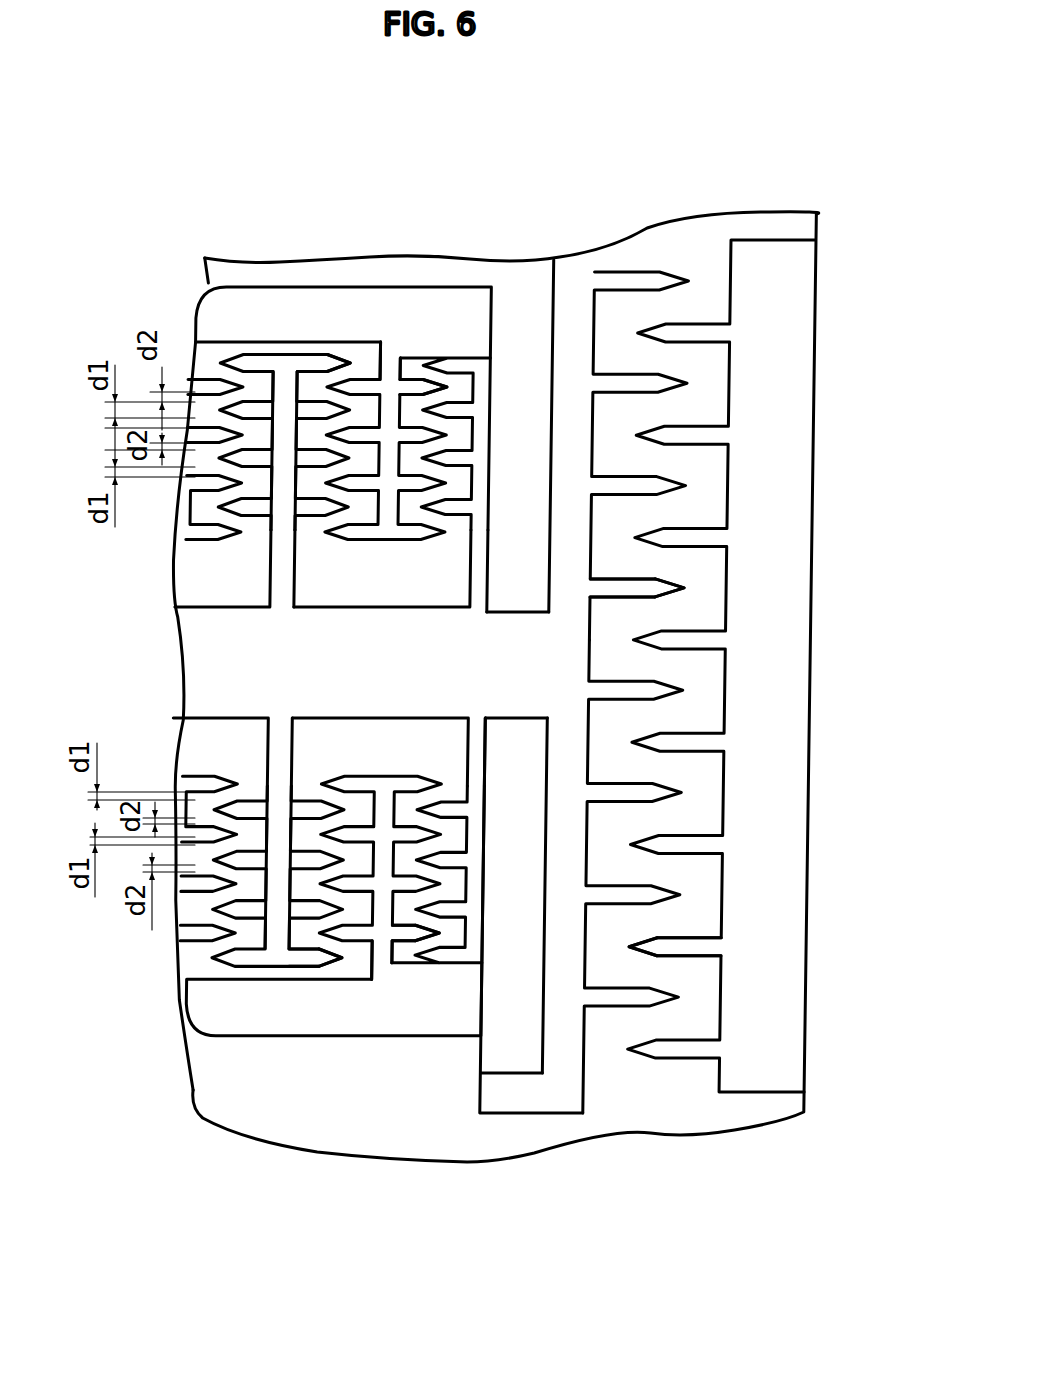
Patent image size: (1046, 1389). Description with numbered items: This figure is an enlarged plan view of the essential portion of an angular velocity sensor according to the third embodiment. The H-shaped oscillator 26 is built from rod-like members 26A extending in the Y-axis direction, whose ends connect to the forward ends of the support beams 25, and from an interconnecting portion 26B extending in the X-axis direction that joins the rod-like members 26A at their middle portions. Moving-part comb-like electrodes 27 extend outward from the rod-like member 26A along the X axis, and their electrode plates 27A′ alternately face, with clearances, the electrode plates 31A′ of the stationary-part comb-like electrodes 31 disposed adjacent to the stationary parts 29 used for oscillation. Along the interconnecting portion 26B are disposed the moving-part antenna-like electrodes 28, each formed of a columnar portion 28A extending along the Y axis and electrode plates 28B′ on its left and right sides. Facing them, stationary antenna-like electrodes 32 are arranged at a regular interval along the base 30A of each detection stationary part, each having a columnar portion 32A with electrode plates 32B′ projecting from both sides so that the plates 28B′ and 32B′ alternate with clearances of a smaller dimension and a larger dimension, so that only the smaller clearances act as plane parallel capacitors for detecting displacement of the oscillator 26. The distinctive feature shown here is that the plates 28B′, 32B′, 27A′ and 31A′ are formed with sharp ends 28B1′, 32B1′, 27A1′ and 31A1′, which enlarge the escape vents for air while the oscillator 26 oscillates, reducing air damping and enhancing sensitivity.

The support beam 25 is at (345, 1092).
The oscillator 26 is at (215, 680).
The rod-like member 26A is at (567, 817).
The interconnecting portion 26B is at (220, 632).
The moving-part comb-like electrode 27 is at (668, 262).
The electrode plate 27A′ is at (625, 598).
The sharp end 27A1′ is at (678, 590).
The antenna-like electrode 28 is at (266, 340).
The columnar portion 28A is at (278, 483).
The electrode plate 28B′ is at (312, 363).
The sharp end 28B1′ is at (333, 363).
The stationary part for oscillation 29 is at (790, 336).
The base 30A is at (370, 297).
The stationary-part comb-like electrode 31 is at (677, 1072).
The electrode plate 31A′ is at (690, 940).
The sharp end 31A1′ is at (637, 944).
The antenna-like electrode 32 is at (362, 565).
The columnar portion 32A is at (393, 363).
The electrode plate 32B′ is at (418, 390).
The sharp end 32B1′ is at (440, 385).